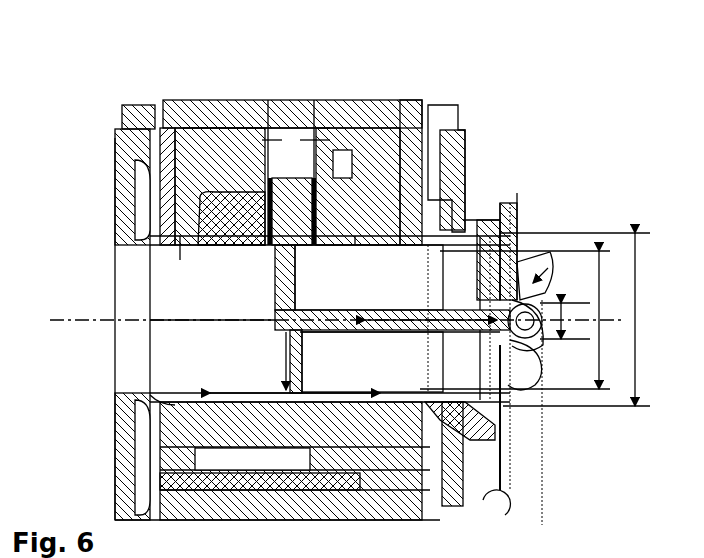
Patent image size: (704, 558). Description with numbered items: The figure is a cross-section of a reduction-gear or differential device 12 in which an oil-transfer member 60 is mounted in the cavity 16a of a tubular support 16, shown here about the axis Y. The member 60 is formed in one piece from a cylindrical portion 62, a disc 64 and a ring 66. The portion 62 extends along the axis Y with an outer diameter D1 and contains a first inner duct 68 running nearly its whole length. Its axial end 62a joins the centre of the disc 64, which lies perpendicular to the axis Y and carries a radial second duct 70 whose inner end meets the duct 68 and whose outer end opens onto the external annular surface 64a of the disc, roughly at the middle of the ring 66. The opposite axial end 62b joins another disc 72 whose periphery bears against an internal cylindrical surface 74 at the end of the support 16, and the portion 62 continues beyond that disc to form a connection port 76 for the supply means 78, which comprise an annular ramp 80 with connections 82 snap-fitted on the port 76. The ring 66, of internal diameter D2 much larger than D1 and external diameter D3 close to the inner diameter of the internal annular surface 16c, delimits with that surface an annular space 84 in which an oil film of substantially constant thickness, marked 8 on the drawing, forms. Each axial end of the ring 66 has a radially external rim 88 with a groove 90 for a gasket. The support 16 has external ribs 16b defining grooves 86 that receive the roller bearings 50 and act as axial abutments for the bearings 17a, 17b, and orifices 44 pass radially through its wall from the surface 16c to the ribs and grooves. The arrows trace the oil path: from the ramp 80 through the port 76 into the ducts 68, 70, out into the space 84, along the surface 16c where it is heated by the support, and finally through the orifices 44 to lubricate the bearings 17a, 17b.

The electric machine 12 is at (388, 100).
The tubular support 16 is at (116, 190).
The cavity 16a is at (118, 250).
The radially external annular ribs 16b is at (152, 158).
The internal annular surface 16c is at (224, 128).
The bearing 17a is at (213, 100).
The bearing 17b is at (396, 112).
The orifices 44 is at (252, 126).
The roller bearings 50 is at (190, 126).
The oil-transfer member 60 is at (138, 266).
The cylindrical portion 62 is at (376, 303).
The axial end 62a is at (262, 332).
The opposite axial end 62b is at (468, 340).
The disc 64 is at (275, 266).
The external annular surface 64a is at (300, 392).
The ring 66 is at (212, 310).
The inner duct 68 is at (408, 333).
The inner duct 70 is at (300, 345).
The disc 72 is at (478, 278).
The internal cylindrical surface 74 is at (518, 208).
The connection port 76 is at (505, 385).
The supply means 78 is at (558, 285).
The annular ramp 80 is at (545, 290).
The connections 82 is at (355, 240).
The annular space 84 is at (190, 390).
The external annular grooves 86 is at (198, 250).
The radially external annular rim 88 is at (145, 403).
The annular groove 90 is at (114, 441).
The component 8 is at (196, 430).
The axis Y is at (78, 322).
The outer diameter D1 is at (565, 321).
The internal diameter D2 is at (519, 320).
The external diameter D3 is at (577, 319).